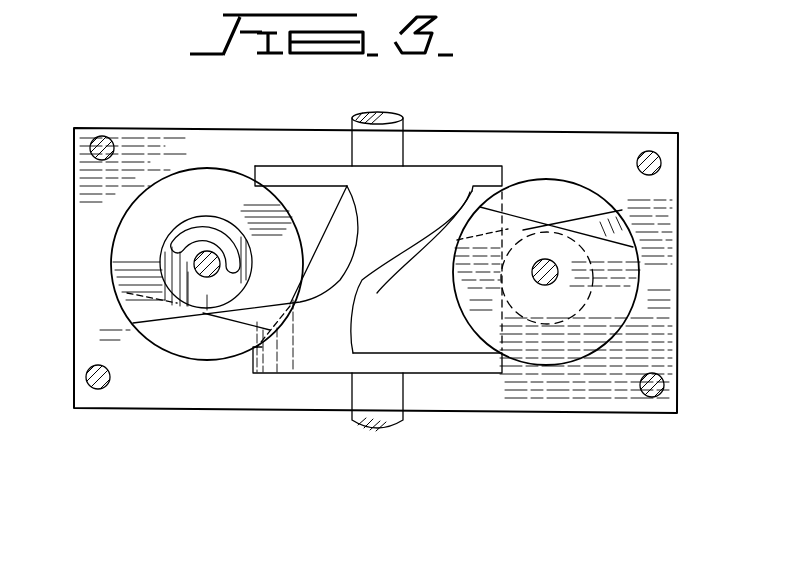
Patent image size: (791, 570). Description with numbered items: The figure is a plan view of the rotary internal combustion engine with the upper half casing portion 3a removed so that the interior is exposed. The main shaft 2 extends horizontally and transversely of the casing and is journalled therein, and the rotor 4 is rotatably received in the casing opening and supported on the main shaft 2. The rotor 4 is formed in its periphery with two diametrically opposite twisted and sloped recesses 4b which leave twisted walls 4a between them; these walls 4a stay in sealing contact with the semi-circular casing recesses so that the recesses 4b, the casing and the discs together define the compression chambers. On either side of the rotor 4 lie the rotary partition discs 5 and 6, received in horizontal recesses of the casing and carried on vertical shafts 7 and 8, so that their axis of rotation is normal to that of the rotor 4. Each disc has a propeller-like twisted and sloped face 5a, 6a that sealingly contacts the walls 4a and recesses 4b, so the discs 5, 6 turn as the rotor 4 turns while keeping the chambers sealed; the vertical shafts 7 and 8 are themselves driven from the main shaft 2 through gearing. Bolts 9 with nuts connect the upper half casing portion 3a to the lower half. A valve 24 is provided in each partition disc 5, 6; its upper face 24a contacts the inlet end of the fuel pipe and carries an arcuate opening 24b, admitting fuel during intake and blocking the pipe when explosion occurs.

The main shaft 2 is at (398, 135).
The upper half casing portion 3a is at (668, 230).
The rotor 4 is at (458, 170).
The twisted walls 4a is at (352, 273).
The twisted and sloped recesses 4b is at (322, 225).
The rotary partition disc 5 is at (203, 180).
The twisted and sloped face 5a is at (255, 313).
The rotary partition disc 6 is at (560, 358).
The twisted and sloped face 6a is at (578, 217).
The vertical shaft 7 is at (195, 264).
The vertical shaft 8 is at (557, 277).
The bolts 9 is at (657, 152).
The valve 24 is at (183, 303).
The upper face 24a is at (205, 297).
The arcuate opening 24b is at (207, 233).